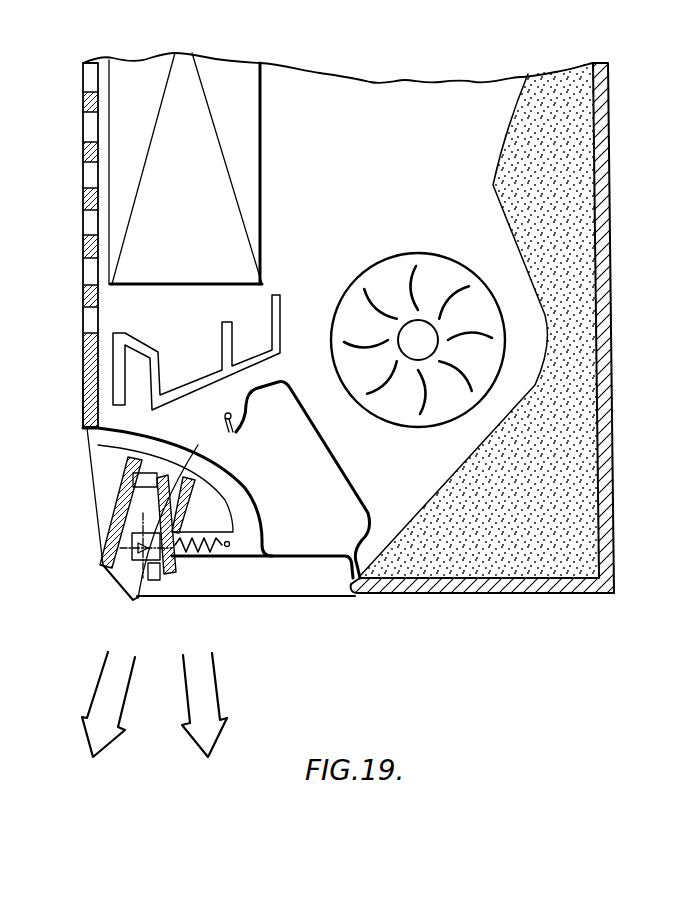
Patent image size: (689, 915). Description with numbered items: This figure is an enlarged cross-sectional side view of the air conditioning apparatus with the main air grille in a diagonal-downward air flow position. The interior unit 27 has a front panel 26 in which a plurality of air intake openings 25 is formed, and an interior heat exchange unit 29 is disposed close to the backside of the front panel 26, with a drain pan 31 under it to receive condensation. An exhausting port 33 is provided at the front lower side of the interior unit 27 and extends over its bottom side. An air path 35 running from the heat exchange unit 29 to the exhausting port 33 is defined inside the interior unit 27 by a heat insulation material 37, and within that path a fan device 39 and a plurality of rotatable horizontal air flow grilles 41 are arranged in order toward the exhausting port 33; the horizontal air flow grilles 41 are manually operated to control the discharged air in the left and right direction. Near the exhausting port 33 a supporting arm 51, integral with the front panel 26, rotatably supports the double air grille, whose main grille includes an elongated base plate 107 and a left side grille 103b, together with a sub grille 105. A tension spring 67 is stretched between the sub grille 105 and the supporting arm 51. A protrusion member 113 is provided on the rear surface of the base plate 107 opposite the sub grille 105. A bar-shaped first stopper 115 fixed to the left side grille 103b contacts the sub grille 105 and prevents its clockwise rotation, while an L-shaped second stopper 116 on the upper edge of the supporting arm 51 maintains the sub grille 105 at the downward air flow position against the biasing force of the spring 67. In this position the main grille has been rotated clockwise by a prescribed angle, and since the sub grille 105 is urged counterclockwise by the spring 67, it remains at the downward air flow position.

The air intake openings 25 is at (83, 212).
The front panel 26 is at (83, 406).
The interior unit 27 is at (608, 138).
The interior heat exchange unit 29 is at (262, 230).
The drain pan 31 is at (104, 352).
The exhausting port 33 is at (114, 580).
The air path 35 is at (418, 100).
The heat insulation material 37 is at (503, 172).
The fan device 39 is at (500, 296).
The horizontal air flow grilles 41 is at (371, 514).
The supporting arm 51 is at (257, 558).
The tension spring 67 is at (226, 549).
The left side grille 103b is at (195, 489).
The sub grille 105 is at (167, 478).
The elongated base plate 107 is at (116, 500).
The protrusion member 113 is at (131, 477).
The first stopper 115 is at (134, 601).
The second stopper 116 is at (118, 537).